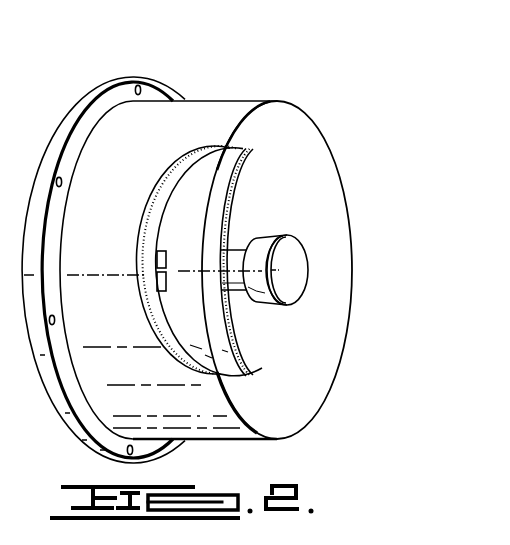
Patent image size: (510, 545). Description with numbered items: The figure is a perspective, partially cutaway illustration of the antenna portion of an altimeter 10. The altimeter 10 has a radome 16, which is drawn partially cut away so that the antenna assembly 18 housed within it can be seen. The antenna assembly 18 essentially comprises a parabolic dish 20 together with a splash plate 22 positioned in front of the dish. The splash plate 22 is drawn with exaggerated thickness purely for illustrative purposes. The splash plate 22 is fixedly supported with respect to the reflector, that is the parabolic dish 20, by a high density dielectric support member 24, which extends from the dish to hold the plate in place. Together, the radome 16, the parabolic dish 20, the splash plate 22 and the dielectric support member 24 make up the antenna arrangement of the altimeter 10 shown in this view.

The altimeter 10 is at (241, 97).
The radome 16 is at (339, 172).
The antenna assembly 18 is at (272, 332).
The parabolic dish 20 is at (188, 299).
The splash plate 22 is at (294, 265).
The high density dielectric support member 24 is at (256, 246).